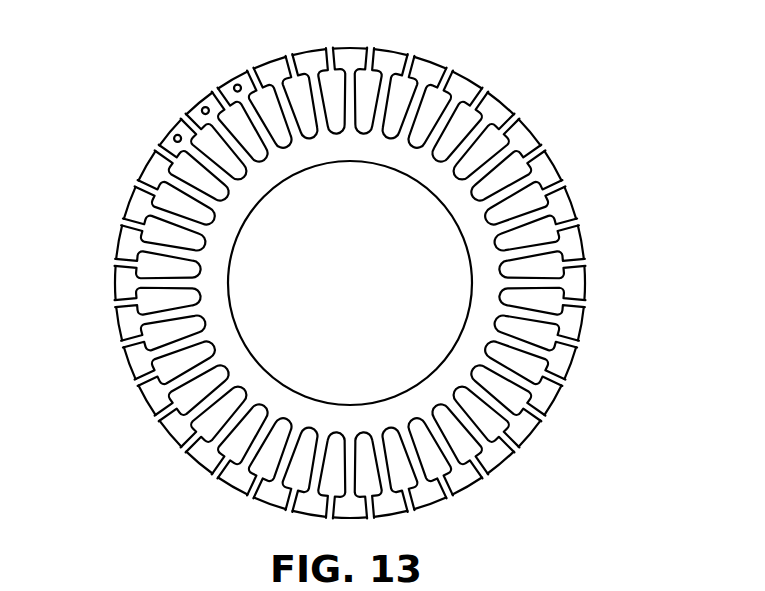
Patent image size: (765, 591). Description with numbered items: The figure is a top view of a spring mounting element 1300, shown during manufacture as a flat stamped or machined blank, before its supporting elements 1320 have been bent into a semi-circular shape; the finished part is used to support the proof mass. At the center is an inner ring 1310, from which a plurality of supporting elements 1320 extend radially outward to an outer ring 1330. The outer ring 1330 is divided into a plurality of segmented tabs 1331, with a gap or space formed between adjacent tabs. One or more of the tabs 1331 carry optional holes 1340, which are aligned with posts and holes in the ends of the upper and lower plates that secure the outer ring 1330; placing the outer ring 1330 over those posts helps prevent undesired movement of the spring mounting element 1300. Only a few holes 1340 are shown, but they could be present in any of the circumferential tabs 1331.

The spring mounting element 1300 is at (545, 80).
The inner ring 1310 is at (443, 195).
The supporting elements 1320 is at (163, 316).
The outer ring 1330 is at (477, 505).
The segmented tabs 1331 is at (520, 430).
The holes 1340 is at (234, 89).